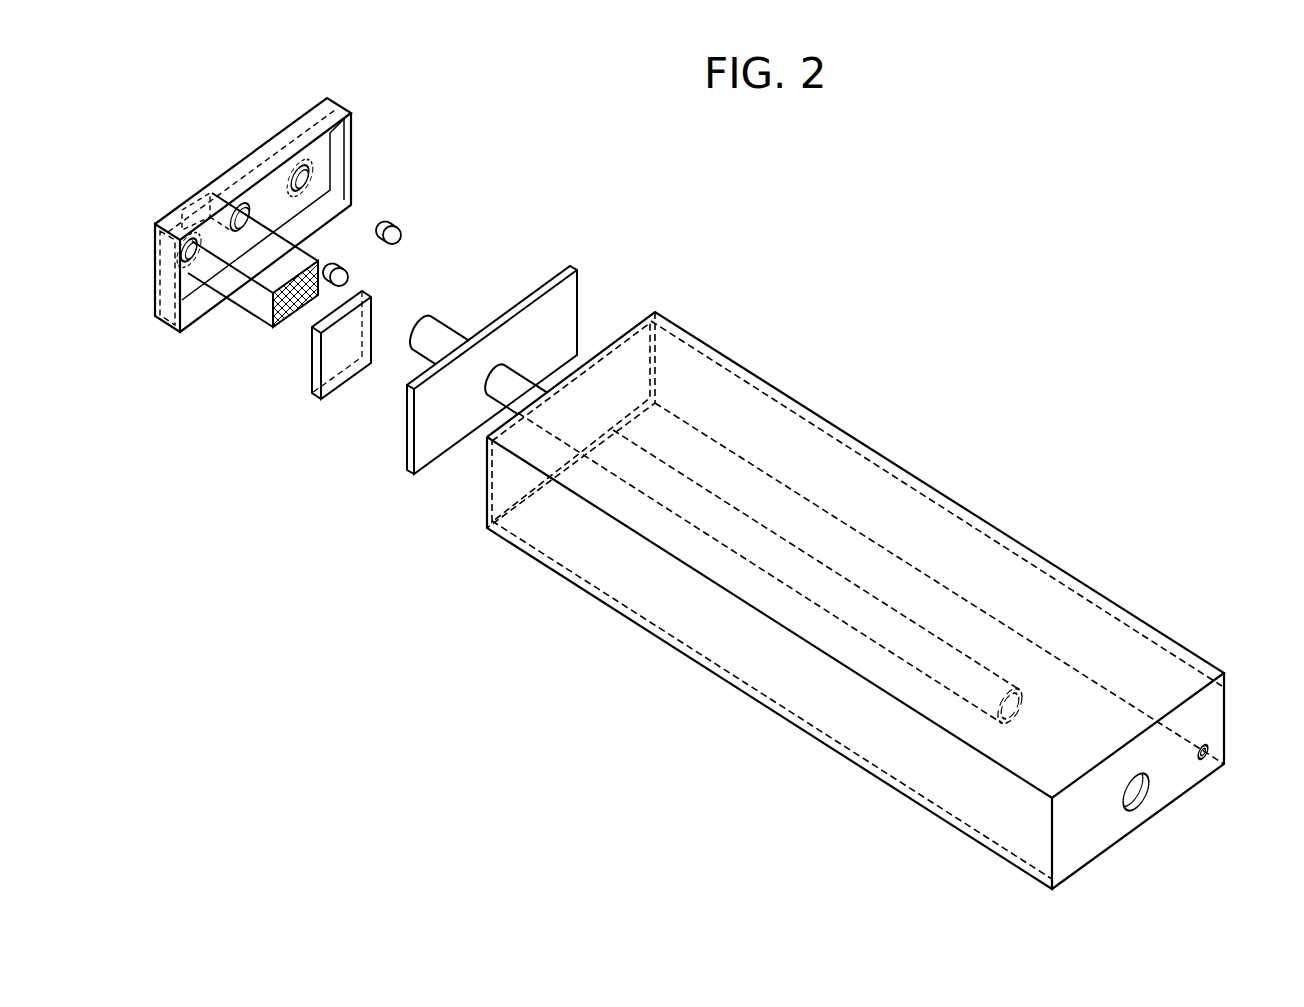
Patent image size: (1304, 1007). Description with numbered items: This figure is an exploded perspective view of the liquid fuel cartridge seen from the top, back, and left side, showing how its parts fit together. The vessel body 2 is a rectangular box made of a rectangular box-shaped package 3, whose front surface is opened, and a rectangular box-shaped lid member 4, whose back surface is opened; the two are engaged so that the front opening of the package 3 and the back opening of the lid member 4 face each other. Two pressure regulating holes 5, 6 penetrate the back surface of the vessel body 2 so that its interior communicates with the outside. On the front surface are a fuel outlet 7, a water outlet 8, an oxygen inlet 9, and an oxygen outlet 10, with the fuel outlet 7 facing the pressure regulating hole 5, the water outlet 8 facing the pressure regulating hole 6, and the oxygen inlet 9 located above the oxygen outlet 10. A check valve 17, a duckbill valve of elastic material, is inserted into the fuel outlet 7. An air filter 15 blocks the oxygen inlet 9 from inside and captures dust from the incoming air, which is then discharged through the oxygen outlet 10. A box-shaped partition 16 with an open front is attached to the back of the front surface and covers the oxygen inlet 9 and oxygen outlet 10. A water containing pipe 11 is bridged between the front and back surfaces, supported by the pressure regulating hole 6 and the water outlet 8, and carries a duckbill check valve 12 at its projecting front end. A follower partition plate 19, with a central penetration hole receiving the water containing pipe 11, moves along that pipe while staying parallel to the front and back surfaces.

The vessel body 2 is at (552, 113).
The package 3 is at (672, 322).
The lid member 4 is at (334, 100).
The pressure regulating hole 5 is at (1210, 750).
The pressure regulating hole 6 is at (1150, 805).
The fuel outlet 7 is at (308, 177).
The water outlet 8 is at (240, 205).
The oxygen inlet 9 is at (190, 230).
The oxygen outlet 10 is at (195, 262).
The water containing pipe 11 is at (443, 337).
The check valve 12 is at (348, 277).
The air filter 15 is at (290, 328).
The partition 16 is at (348, 396).
The check valve 17 is at (402, 235).
The follower partition plate 19 is at (567, 267).